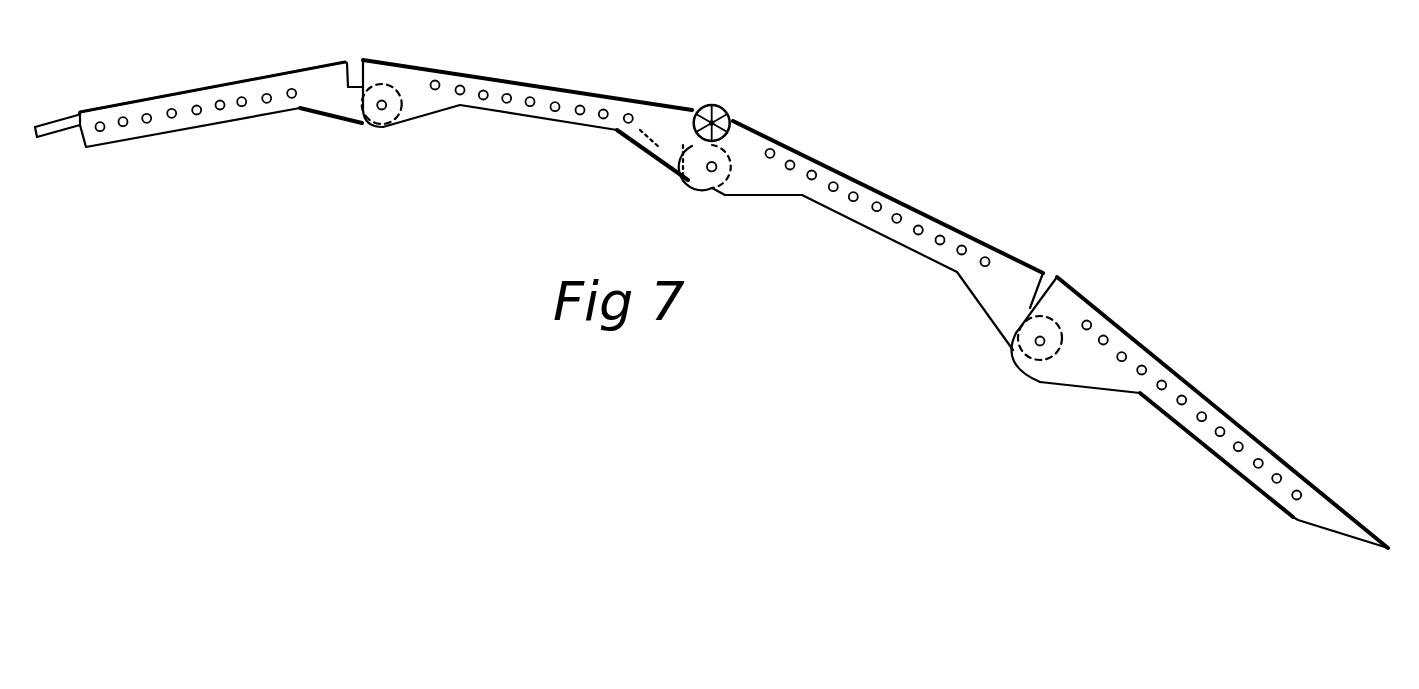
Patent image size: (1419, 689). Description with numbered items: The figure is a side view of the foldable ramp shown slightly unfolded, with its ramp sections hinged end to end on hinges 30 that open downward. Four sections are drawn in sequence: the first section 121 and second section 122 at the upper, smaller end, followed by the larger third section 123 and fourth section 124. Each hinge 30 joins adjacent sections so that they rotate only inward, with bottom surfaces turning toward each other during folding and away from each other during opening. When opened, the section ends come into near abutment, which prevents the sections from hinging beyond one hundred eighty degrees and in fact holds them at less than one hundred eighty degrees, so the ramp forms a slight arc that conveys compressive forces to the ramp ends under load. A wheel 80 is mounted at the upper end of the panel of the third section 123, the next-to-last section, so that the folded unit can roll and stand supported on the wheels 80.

The first section 121 is at (170, 97).
The second section 122 is at (528, 83).
The third section 123 is at (943, 220).
The fourth section 124 is at (1175, 372).
The wheel 80 is at (718, 103).
The hinge 30 is at (1020, 357).